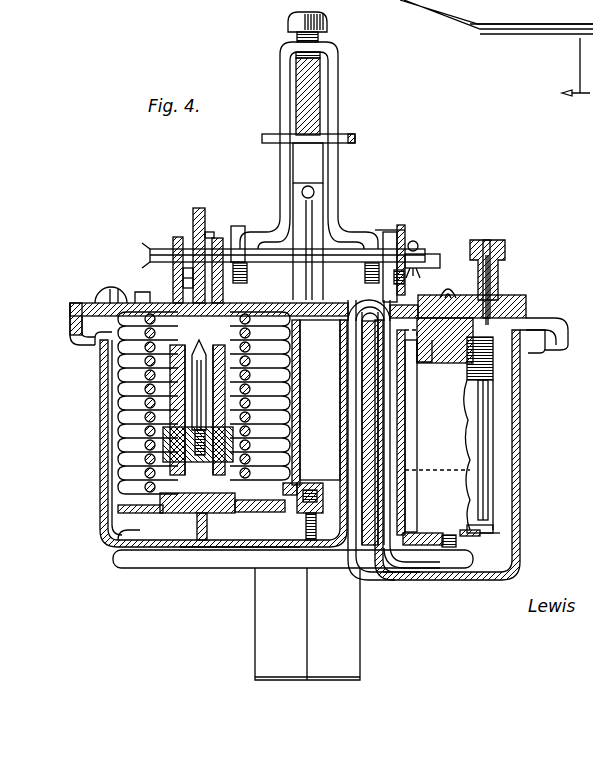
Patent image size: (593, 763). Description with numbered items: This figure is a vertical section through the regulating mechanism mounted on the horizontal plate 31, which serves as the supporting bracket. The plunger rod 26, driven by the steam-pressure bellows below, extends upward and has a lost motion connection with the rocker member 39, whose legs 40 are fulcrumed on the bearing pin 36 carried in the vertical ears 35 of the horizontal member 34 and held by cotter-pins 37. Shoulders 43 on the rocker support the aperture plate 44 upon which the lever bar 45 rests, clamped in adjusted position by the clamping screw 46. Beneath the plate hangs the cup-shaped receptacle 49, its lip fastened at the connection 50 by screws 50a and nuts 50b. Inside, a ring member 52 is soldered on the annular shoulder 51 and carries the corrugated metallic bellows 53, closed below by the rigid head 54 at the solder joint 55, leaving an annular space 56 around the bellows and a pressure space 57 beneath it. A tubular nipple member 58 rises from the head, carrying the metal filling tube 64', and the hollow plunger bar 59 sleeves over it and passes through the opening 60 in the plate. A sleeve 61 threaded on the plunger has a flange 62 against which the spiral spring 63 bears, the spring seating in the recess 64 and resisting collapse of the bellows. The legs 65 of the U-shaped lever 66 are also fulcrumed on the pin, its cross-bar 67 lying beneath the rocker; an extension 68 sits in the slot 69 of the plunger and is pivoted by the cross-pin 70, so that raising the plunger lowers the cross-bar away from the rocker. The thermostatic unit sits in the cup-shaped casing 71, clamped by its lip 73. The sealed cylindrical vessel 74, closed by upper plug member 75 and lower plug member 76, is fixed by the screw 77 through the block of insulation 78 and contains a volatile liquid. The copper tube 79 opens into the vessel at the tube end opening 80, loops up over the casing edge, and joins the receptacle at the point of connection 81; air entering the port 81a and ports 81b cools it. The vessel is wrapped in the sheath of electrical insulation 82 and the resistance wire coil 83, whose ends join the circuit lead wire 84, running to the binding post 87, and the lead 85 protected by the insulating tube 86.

The plunger rod 26 is at (315, 290).
The horizontal plate 31 is at (111, 288).
The horizontal member 34 is at (320, 400).
The vertical ears 35 is at (400, 228).
The bearing pin 36 is at (430, 256).
The cotter-pins 37 is at (418, 243).
The rocker member 39 is at (339, 112).
The legs 40 is at (280, 170).
The shoulders 43 is at (308, 221).
The aperture plate 44 is at (356, 139).
The lever bar 45 is at (320, 88).
The clamping screw 46 is at (328, 22).
The cup-shaped receptacle 49 is at (72, 322).
The connection 50 is at (70, 308).
The screws 50a is at (478, 27).
The nuts 50b is at (100, 345).
The annular shoulder 51 is at (108, 384).
The ring member 52 is at (132, 290).
The corrugated metallic bellows 53 is at (118, 456).
The rigid head 54 is at (232, 518).
The solder joint 55 is at (120, 524).
The annular space 56 is at (288, 424).
The pressure space 57 is at (188, 556).
The tubular nipple member 58 is at (212, 547).
The plunger bar 59 is at (178, 237).
The opening 60 is at (240, 293).
The sleeve 61 is at (288, 452).
The flange 62 is at (283, 482).
The spiral spring 63 is at (118, 418).
The recess 64 is at (244, 326).
The metal filling tube 64' is at (315, 402).
The legs 65 is at (404, 235).
The U-shaped lever 66 is at (218, 238).
The cross-bar 67 is at (388, 232).
The extension 68 is at (199, 208).
The slot 69 is at (183, 282).
The cross-pin 70 is at (240, 236).
The cup-shaped casing 71 is at (520, 440).
The lip 73 is at (546, 348).
The sealed cylindrical vessel 74 is at (494, 508).
The upper plug member 75 is at (445, 356).
The lower plug member 76 is at (422, 533).
The screw 77 is at (448, 284).
The block of insulation 78 is at (526, 302).
The copper tube 79 is at (406, 434).
The tube end opening 80 is at (450, 548).
The point of connection 81 is at (310, 520).
The port 81a is at (412, 580).
The ports 81b is at (405, 358).
The sheath of electrical insulation 82 is at (372, 482).
The resistance wire coil 83 is at (493, 358).
The circuit lead wire 84 is at (488, 240).
The lead 85 is at (500, 535).
The insulating tube 86 is at (488, 460).
The binding post 87 is at (500, 290).